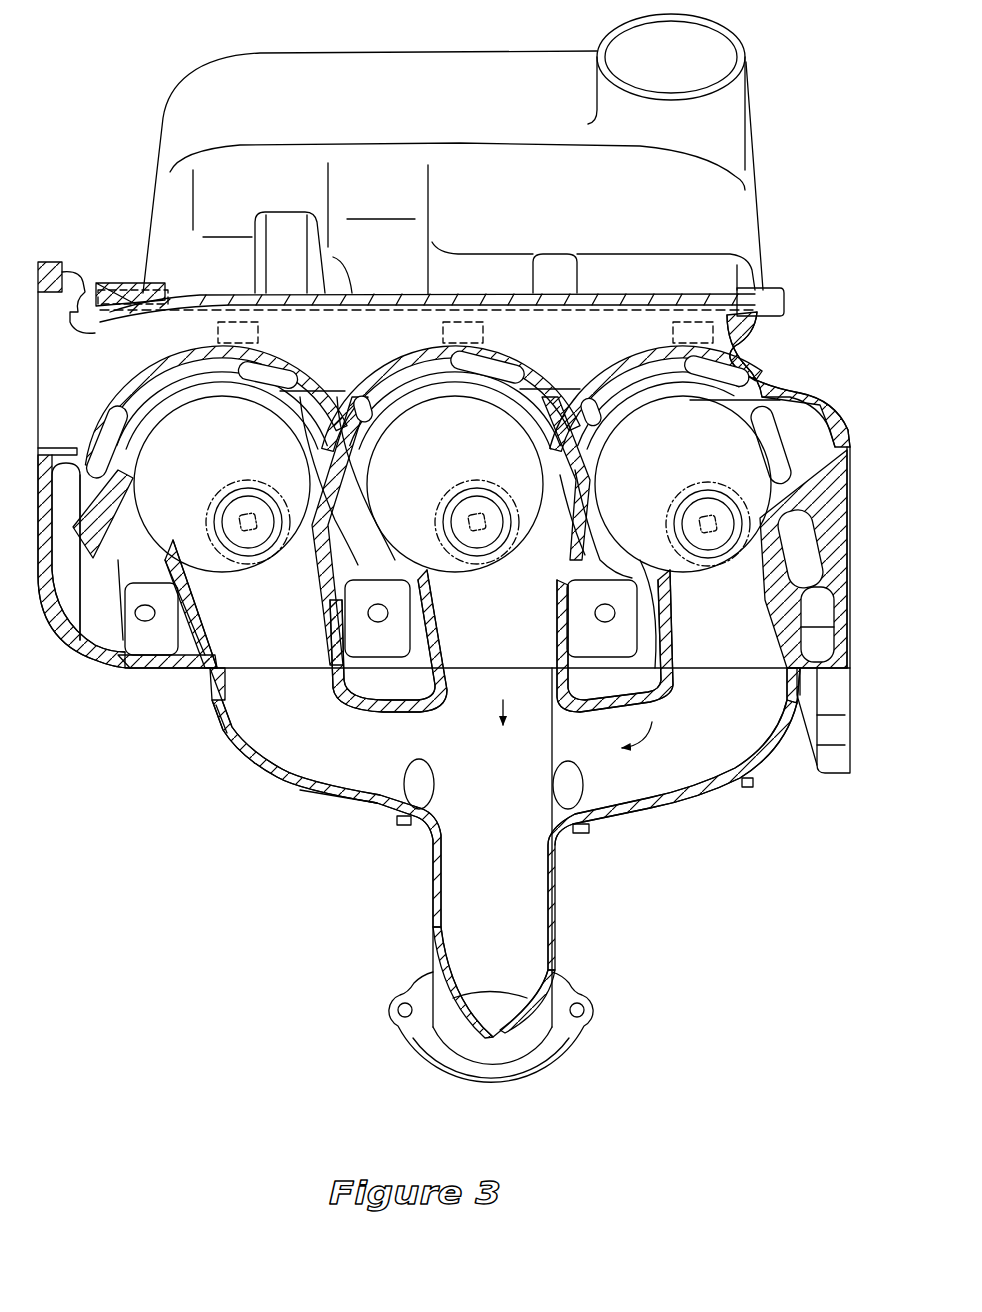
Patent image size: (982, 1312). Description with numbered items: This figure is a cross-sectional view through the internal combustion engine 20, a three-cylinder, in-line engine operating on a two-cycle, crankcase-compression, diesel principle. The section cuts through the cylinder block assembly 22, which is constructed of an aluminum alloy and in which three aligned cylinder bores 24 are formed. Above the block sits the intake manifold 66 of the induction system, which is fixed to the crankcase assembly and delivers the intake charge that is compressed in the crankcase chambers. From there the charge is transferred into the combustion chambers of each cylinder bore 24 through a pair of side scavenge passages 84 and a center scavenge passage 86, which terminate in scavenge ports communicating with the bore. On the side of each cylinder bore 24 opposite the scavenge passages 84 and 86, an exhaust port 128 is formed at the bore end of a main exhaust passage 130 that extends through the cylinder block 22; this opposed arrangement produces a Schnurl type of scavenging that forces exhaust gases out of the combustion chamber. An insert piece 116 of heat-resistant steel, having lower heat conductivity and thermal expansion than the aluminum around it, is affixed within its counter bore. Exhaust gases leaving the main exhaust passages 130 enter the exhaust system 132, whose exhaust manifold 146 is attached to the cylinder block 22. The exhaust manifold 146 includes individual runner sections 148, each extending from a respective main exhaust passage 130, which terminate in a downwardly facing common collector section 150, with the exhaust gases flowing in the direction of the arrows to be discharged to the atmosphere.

The internal combustion engine 20 is at (821, 316).
The cylinder block assembly 22 is at (830, 404).
The cylinder bores 24 is at (602, 445).
The intake manifold 66 is at (157, 122).
The side scavenge passages 84 is at (318, 445).
The center scavenge passage 86 is at (133, 377).
The insert piece 116 is at (727, 482).
The exhaust port 128 is at (748, 548).
The main exhaust passage 130 is at (693, 617).
The exhaust system 132 is at (336, 890).
The exhaust manifold 146 is at (320, 800).
The runner sections 148 is at (263, 748).
The common collector section 150 is at (527, 878).